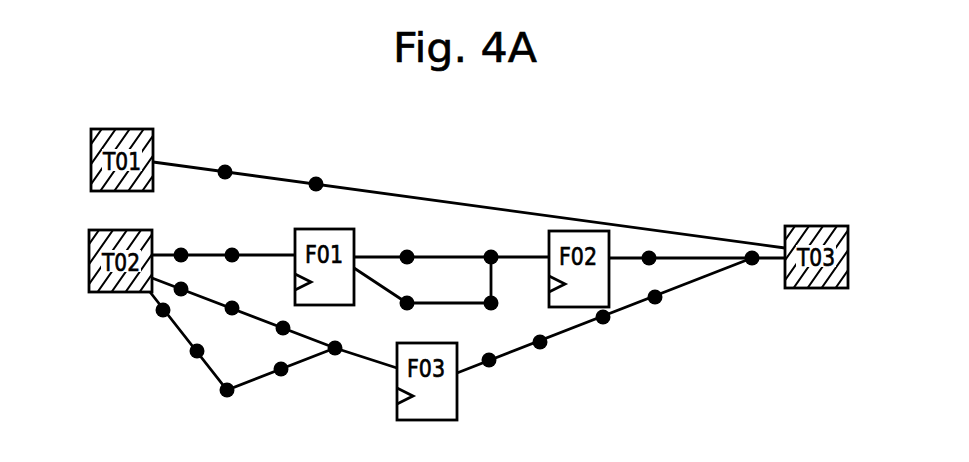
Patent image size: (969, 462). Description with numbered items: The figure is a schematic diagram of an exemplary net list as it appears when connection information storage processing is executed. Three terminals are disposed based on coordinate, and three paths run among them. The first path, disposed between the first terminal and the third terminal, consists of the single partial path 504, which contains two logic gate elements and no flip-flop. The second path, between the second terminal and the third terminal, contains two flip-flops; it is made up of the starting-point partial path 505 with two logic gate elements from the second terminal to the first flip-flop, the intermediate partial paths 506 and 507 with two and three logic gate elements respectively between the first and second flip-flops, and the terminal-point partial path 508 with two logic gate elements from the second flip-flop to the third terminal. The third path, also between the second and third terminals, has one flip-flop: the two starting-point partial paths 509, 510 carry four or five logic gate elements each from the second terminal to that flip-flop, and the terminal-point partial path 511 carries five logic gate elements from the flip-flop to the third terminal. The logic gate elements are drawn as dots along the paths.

The partial path 504 is at (364, 190).
The starting-point partial path 505 is at (210, 248).
The intermediate partial path 506 is at (455, 237).
The intermediate partial path 507 is at (465, 305).
The terminal-point partial path 508 is at (688, 258).
The starting-point partial path 509 is at (250, 320).
The starting-point partial path 510 is at (210, 373).
The terminal-point partial path 511 is at (628, 312).